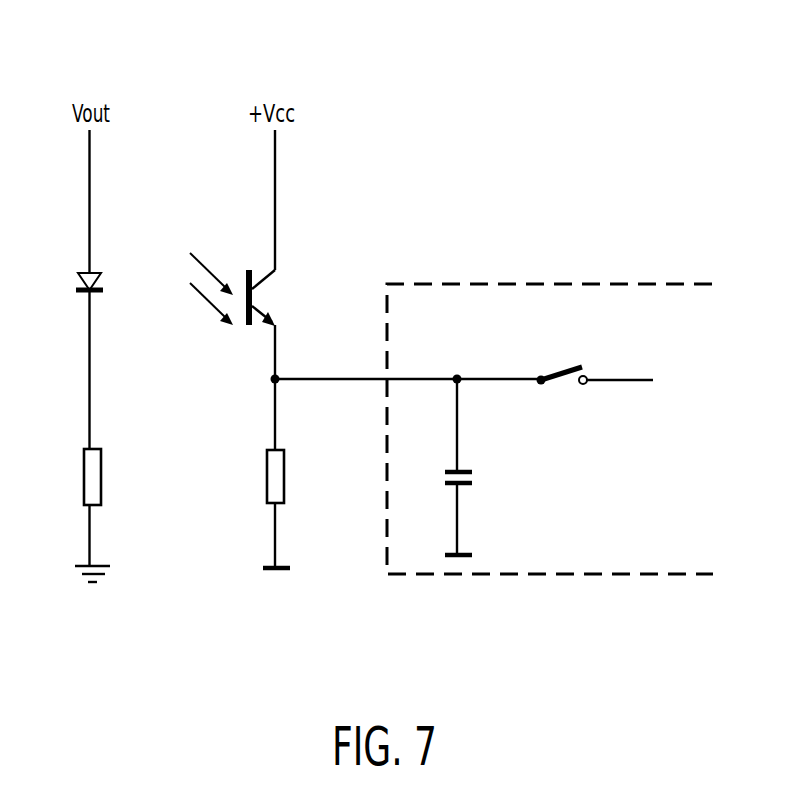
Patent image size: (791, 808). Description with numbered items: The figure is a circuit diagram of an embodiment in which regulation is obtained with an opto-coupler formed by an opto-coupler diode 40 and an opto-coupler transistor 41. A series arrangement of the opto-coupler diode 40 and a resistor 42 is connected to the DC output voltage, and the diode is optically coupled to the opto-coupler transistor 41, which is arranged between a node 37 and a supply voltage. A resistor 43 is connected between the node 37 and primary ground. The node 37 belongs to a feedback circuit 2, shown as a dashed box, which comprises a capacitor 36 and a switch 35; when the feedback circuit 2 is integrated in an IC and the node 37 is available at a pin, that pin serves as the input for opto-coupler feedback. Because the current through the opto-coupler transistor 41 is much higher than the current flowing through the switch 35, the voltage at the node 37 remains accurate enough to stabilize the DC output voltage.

The feedback circuit 2 is at (505, 282).
The switch 35 is at (563, 366).
The capacitor 36 is at (473, 476).
The node 37 is at (497, 378).
The opto-coupler diode 40 is at (78, 283).
The opto-coupler transistor 41 is at (265, 295).
The resistor 42 is at (84, 470).
The resistor 43 is at (267, 466).